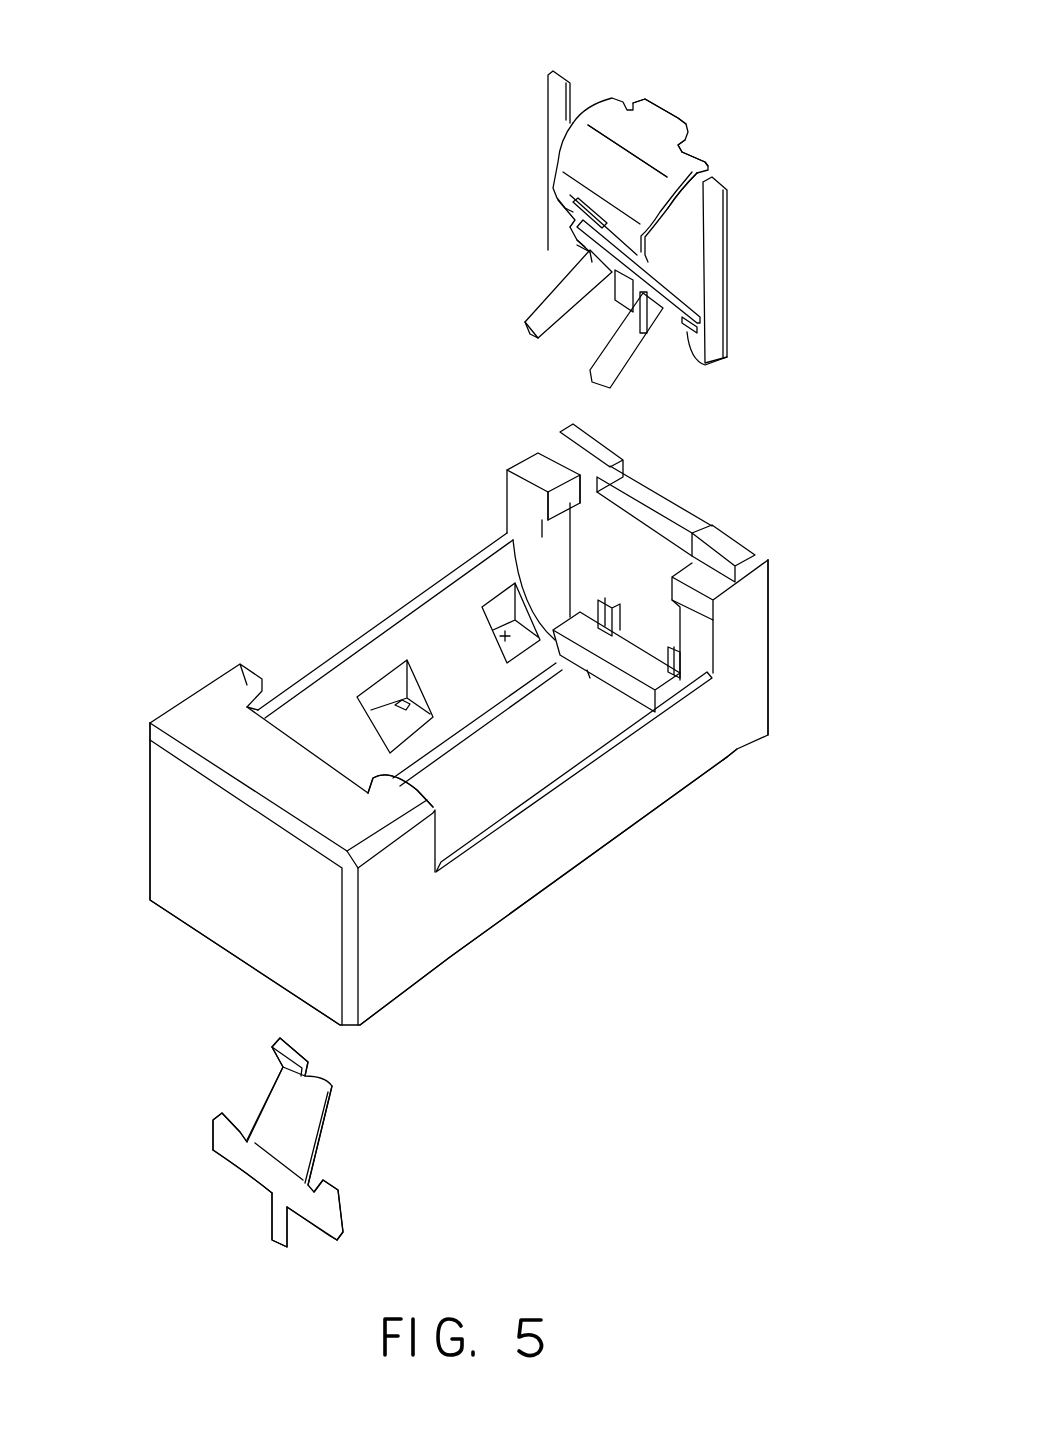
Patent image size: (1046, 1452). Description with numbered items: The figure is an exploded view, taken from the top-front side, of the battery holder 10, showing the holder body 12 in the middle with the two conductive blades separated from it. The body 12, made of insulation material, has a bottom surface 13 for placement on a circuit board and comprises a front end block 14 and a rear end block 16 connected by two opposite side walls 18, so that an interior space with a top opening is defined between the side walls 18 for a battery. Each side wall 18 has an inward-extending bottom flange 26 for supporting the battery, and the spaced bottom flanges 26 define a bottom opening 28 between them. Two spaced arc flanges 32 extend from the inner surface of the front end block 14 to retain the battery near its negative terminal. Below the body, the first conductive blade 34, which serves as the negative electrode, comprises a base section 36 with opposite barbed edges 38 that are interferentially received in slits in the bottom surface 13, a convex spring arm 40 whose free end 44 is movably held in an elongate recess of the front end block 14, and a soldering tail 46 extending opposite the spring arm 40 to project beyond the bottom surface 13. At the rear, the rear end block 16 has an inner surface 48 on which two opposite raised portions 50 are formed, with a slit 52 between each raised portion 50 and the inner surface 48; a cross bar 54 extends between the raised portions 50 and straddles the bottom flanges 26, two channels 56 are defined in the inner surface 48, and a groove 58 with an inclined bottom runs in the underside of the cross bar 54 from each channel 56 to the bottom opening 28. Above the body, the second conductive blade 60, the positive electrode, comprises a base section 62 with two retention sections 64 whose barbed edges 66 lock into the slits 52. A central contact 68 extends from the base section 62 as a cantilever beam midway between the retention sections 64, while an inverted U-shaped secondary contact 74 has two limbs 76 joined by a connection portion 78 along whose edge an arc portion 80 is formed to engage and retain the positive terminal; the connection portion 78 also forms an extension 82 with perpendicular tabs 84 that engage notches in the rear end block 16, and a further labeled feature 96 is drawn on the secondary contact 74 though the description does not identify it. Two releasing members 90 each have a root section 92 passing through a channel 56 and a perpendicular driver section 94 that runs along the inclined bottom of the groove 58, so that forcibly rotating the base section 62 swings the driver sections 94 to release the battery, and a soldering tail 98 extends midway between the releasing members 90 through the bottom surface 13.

The battery holder 10 is at (284, 118).
The body 12 is at (467, 953).
The bottom surface 13 is at (748, 748).
The front end block 14 is at (253, 750).
The rear end block 16 is at (737, 547).
The side walls 18 is at (528, 810).
The bottom flange 26 is at (455, 700).
The bottom opening 28 is at (460, 780).
The arc flanges 32 is at (247, 685).
The first conductive blade 34 is at (345, 1092).
The base section 36 is at (268, 1167).
The barbed edges 38 is at (218, 1123).
The spring arm 40 is at (307, 1117).
The free end 44 is at (263, 1040).
The soldering tail 46 is at (285, 1250).
The inner surface 48 is at (627, 533).
The raised portions 50 is at (533, 523).
The slit 52 is at (545, 455).
The cross bar 54 is at (648, 712).
The channels 56 is at (603, 625).
The groove 58 is at (570, 600).
The second conductive blade 60 is at (612, 77).
The base section 62 is at (577, 253).
The retention sections 64 is at (563, 120).
The barbed edge 66 is at (690, 338).
The central contact 68 is at (623, 237).
The secondary contact 74 is at (705, 165).
The limbs 76 is at (577, 217).
The connection portion 78 is at (633, 187).
The arc portion 80 is at (577, 227).
The extension 82 is at (693, 150).
The perpendicular tabs 84 is at (703, 165).
The releasing members 90 is at (517, 327).
The root section 92 is at (590, 272).
The driver section 94 is at (553, 317).
The locating tab 96 is at (665, 115).
The soldering tail 98 is at (697, 327).